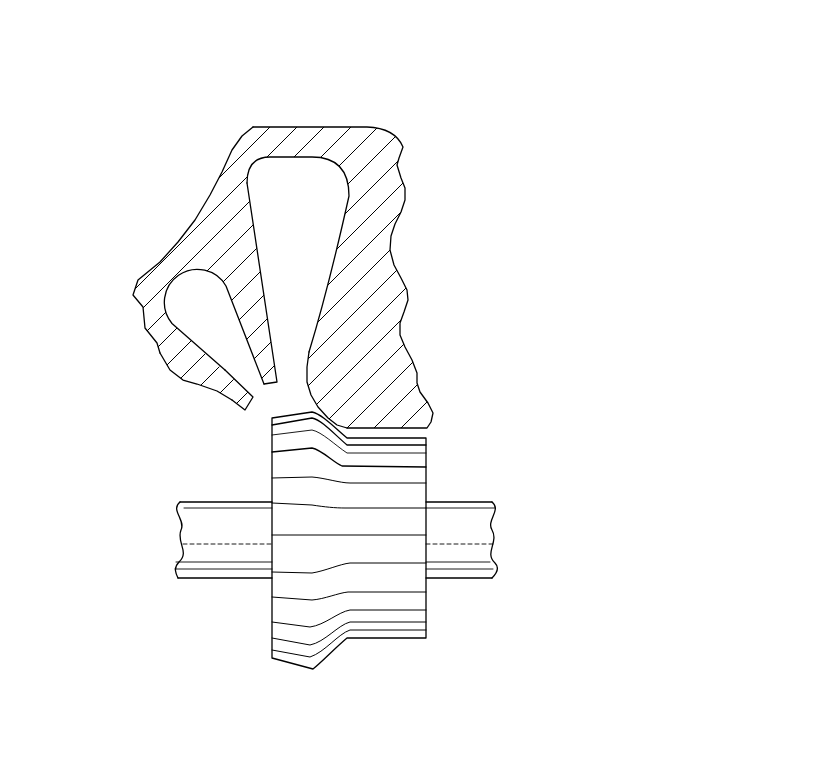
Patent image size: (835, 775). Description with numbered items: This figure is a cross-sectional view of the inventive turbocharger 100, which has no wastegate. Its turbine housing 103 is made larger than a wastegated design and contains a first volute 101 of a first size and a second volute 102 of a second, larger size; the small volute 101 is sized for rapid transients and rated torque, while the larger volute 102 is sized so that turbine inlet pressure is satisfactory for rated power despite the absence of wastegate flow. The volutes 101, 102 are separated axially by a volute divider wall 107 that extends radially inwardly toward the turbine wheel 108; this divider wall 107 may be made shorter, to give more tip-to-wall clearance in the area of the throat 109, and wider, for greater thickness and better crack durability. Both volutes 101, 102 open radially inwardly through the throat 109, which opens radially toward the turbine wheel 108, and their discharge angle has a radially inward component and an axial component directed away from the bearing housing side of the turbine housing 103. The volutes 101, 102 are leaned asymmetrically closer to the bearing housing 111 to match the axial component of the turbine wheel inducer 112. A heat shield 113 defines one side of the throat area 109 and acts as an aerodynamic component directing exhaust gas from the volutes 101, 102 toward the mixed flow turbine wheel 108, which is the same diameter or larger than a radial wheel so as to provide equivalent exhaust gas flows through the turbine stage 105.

The turbocharger 100 is at (572, 155).
The first volute 101 is at (277, 193).
The second volute 102 is at (177, 292).
The turbine housing 103 is at (172, 232).
The turbine stage 105 is at (216, 127).
The volute divider wall 107 is at (258, 310).
The turbine wheel 108 is at (366, 628).
The throat 109 is at (296, 372).
The bearing housing 111 is at (135, 366).
The turbine wheel inducer 112 is at (275, 416).
The heat shield 113 is at (195, 366).